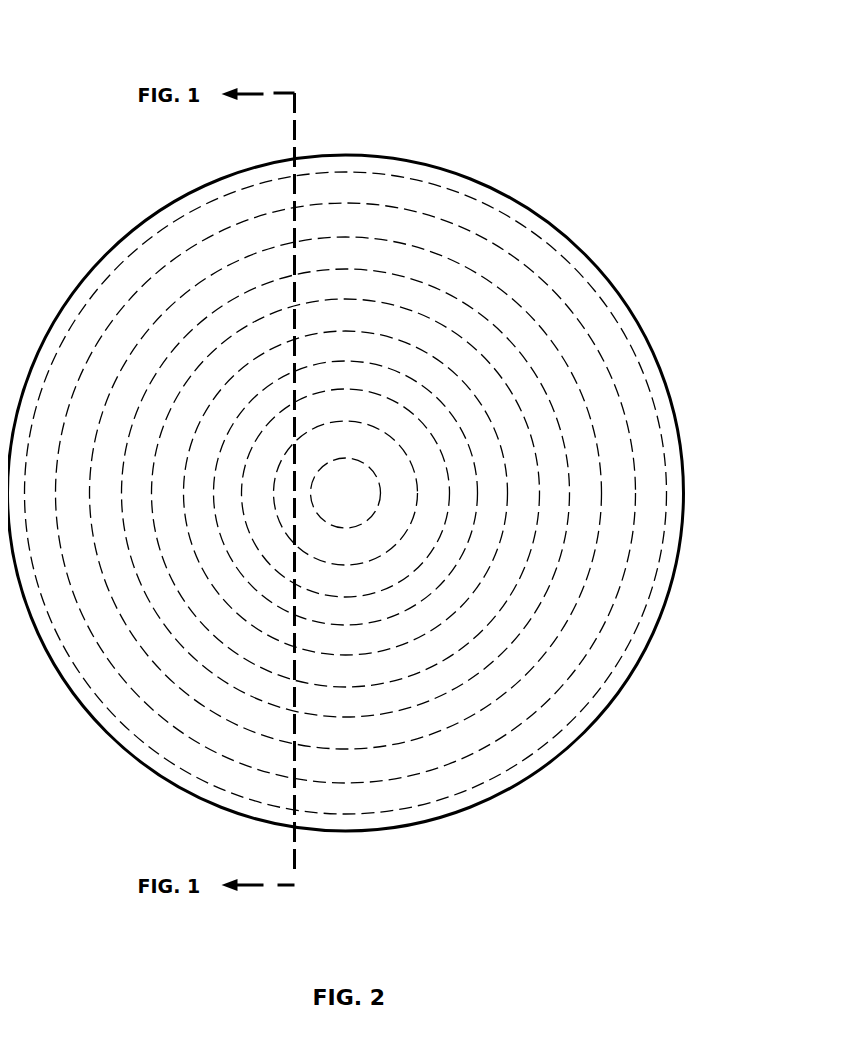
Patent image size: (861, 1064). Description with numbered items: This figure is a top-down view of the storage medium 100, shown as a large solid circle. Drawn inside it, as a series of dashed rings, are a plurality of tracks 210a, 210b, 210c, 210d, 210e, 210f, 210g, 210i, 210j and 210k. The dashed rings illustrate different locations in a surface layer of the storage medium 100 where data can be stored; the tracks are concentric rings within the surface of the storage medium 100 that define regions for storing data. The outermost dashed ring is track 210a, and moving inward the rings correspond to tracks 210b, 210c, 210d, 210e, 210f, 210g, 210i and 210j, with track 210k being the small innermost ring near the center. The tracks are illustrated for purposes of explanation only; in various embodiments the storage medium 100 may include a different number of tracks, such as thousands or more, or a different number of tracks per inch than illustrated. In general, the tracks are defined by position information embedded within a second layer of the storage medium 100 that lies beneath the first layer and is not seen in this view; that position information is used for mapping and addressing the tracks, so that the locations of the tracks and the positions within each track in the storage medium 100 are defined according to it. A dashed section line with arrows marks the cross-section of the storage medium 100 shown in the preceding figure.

The storage medium 100 is at (683, 493).
The track 210a is at (346, 172).
The track 210b is at (347, 203).
The track 210c is at (347, 237).
The track 210d is at (347, 269).
The track 210e is at (347, 299).
The track 210f is at (347, 331).
The track 210g is at (440, 399).
The track 210i is at (449, 494).
The track 210j is at (397, 543).
The track 210k is at (345, 528).